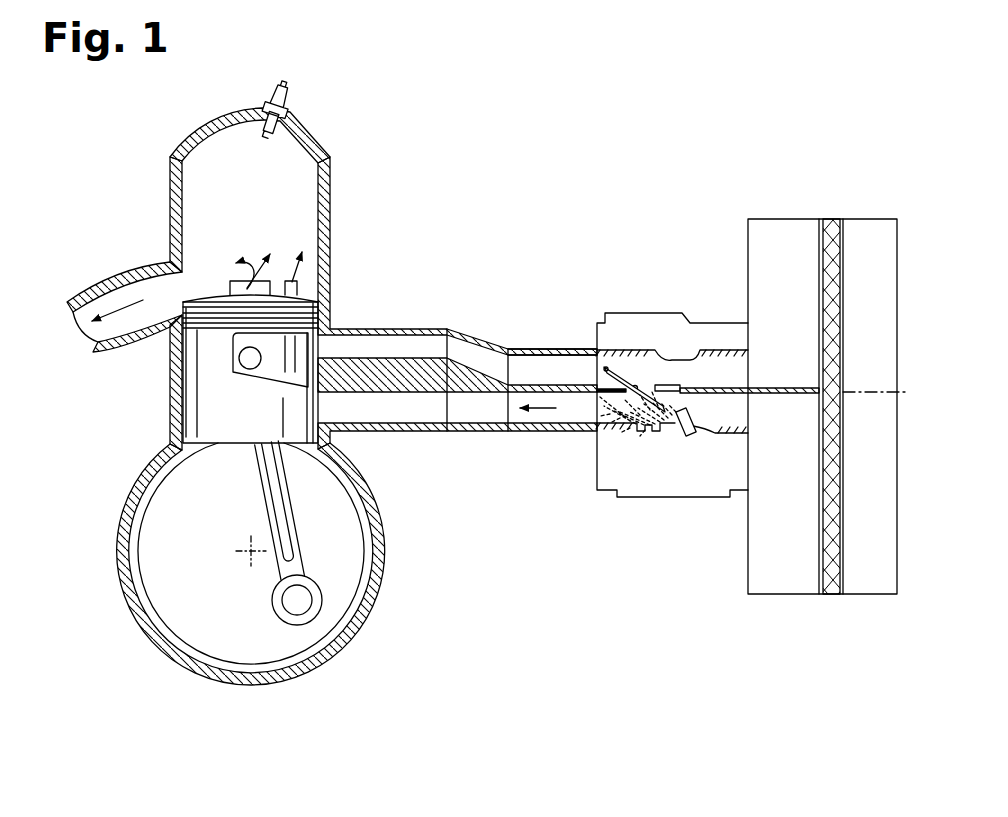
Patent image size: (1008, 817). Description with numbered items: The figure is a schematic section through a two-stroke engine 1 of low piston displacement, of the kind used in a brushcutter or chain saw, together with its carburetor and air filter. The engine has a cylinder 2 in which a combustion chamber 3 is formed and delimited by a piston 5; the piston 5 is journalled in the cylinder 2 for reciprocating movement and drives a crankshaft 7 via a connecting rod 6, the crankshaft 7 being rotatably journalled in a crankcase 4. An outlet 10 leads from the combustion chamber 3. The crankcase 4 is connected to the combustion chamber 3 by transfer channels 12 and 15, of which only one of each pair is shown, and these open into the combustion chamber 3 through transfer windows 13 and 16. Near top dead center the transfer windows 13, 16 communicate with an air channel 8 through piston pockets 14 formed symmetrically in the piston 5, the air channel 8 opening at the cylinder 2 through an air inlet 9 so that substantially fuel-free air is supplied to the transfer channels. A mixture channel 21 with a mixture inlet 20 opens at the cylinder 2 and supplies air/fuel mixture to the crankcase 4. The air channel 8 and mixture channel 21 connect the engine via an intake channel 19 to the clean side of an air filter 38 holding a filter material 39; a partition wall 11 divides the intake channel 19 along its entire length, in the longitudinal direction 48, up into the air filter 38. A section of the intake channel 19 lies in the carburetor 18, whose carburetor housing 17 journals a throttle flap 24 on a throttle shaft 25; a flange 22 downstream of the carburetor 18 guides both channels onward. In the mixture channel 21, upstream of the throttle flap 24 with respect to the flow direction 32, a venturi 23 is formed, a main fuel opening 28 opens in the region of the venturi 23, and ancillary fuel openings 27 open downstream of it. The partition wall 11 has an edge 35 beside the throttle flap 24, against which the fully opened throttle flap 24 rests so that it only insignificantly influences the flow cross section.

The two-stroke engine 1 is at (120, 217).
The cylinder 2 is at (169, 178).
The combustion chamber 3 is at (303, 183).
The crankcase 4 is at (368, 611).
The piston 5 is at (199, 396).
The connecting rod 6 is at (292, 520).
The crankshaft 7 is at (246, 553).
The air channel 8 is at (343, 350).
The air inlet 9 is at (325, 346).
The outlet 10 is at (97, 333).
The partition wall 11 is at (538, 384).
The transfer channel 12 is at (298, 288).
The transfer window 13 is at (300, 270).
The piston pocket 14 is at (283, 367).
The transfer channel 15 is at (233, 288).
The transfer window 16 is at (234, 262).
The carburetor housing 17 is at (630, 477).
The carburetor 18 is at (606, 290).
The intake channel 19 is at (737, 412).
The mixture inlet 20 is at (323, 406).
The mixture channel 21 is at (441, 414).
The flange 22 is at (554, 348).
The venturi 23 is at (697, 359).
The throttle flap 24 is at (633, 378).
The throttle shaft 25 is at (658, 387).
The ancillary fuel opening 27 is at (643, 440).
The main fuel opening 28 is at (693, 436).
The flow direction 32 is at (538, 415).
The edge 35 is at (668, 386).
The air filter 38 is at (829, 207).
The filter material 39 is at (839, 247).
The longitudinal direction 48 is at (712, 386).